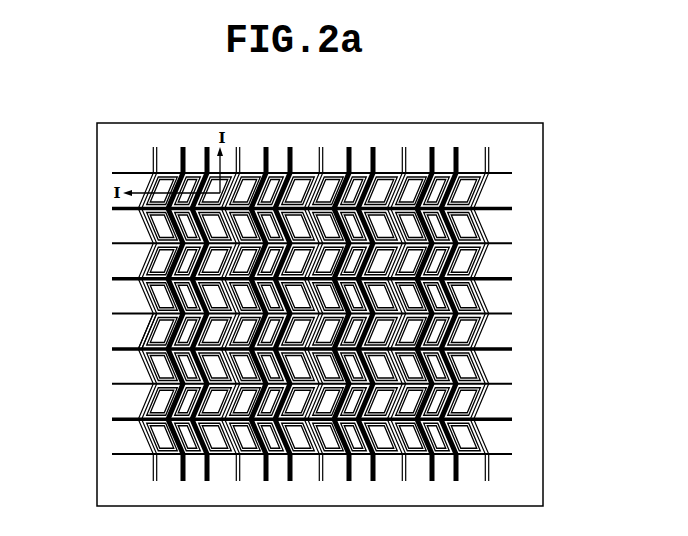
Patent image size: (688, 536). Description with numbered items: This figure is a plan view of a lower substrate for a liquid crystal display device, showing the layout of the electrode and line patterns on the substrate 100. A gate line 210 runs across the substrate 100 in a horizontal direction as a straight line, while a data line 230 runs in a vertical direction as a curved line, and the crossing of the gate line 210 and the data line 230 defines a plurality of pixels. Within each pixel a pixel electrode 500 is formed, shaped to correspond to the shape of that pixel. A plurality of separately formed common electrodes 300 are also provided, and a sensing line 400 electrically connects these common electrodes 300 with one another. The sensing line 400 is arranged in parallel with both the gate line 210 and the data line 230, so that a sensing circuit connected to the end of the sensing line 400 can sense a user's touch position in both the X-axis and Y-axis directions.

The substrate 100 is at (97, 314).
The gate line 210 is at (508, 166).
The data line 230 is at (405, 147).
The common electrode 300 is at (277, 180).
The sensing line 400 is at (112, 209).
The pixel electrode 500 is at (153, 336).